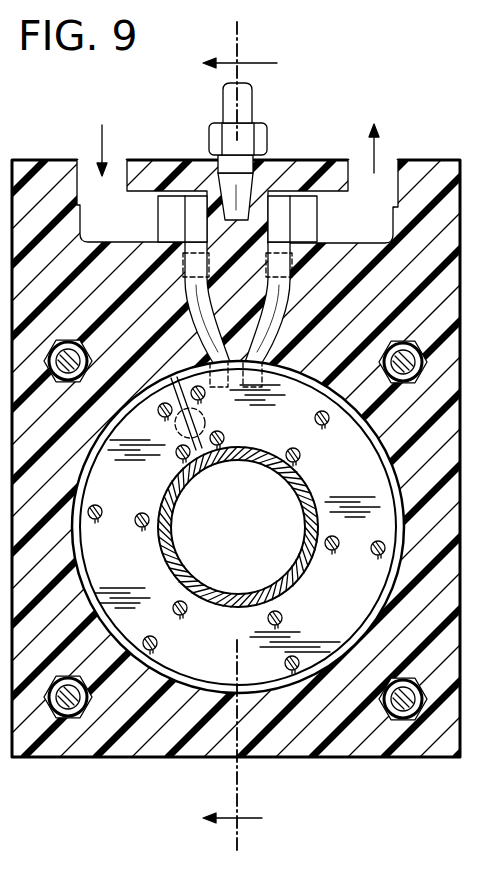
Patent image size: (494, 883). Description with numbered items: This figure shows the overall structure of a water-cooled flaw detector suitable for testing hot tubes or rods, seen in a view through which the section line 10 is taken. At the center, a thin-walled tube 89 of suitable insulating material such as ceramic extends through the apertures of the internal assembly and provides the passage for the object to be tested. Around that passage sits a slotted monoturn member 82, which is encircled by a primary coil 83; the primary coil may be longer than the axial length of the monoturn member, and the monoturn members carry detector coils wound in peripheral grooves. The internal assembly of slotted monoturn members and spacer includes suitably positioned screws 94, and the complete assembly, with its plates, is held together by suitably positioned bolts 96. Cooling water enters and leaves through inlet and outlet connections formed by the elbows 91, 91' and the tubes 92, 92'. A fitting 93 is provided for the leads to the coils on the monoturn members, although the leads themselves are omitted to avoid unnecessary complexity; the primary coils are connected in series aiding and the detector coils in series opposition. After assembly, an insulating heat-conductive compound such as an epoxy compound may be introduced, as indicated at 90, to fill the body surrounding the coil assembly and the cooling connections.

The section line 10- 10 is at (241, 436).
The slotted monoturn member 82 is at (370, 512).
The primary coil 83 is at (395, 446).
The thin-walled tube 89 is at (303, 511).
The insulating heat-conductive compound 90 is at (436, 243).
The elbow 91 is at (142, 180).
The elbow 91' is at (355, 180).
The tube 92 is at (180, 281).
The tube 92' is at (295, 281).
The fitting 93 is at (252, 105).
The screw 94 is at (322, 426).
The bolt 96 is at (74, 340).